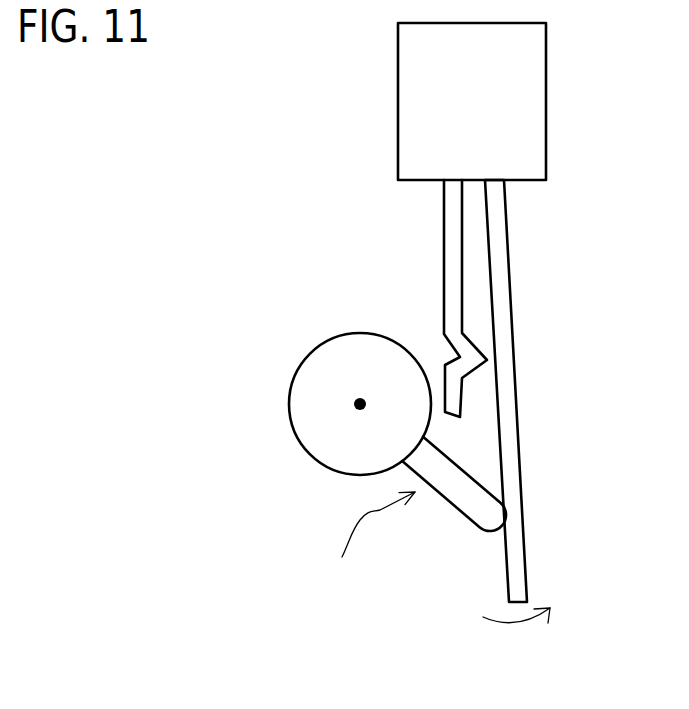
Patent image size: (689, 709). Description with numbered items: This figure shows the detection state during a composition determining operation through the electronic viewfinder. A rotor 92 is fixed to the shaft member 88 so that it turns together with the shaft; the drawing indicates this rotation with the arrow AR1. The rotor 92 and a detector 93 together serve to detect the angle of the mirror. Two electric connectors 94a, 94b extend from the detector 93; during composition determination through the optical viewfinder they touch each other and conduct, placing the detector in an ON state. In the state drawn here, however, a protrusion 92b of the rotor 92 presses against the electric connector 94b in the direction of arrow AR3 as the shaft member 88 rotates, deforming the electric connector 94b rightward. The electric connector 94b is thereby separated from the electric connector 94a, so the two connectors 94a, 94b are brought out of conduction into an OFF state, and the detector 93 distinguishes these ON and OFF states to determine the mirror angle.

The detector 93 is at (546, 100).
The electric connector 94a is at (443, 232).
The electric connector 94b is at (507, 232).
The rotor 92 is at (313, 460).
The shaft member 88 is at (356, 404).
The protrusion 92b is at (457, 513).
The rotation direction arrow of rotary member AR1 is at (366, 543).
The arrow AR3 is at (517, 624).